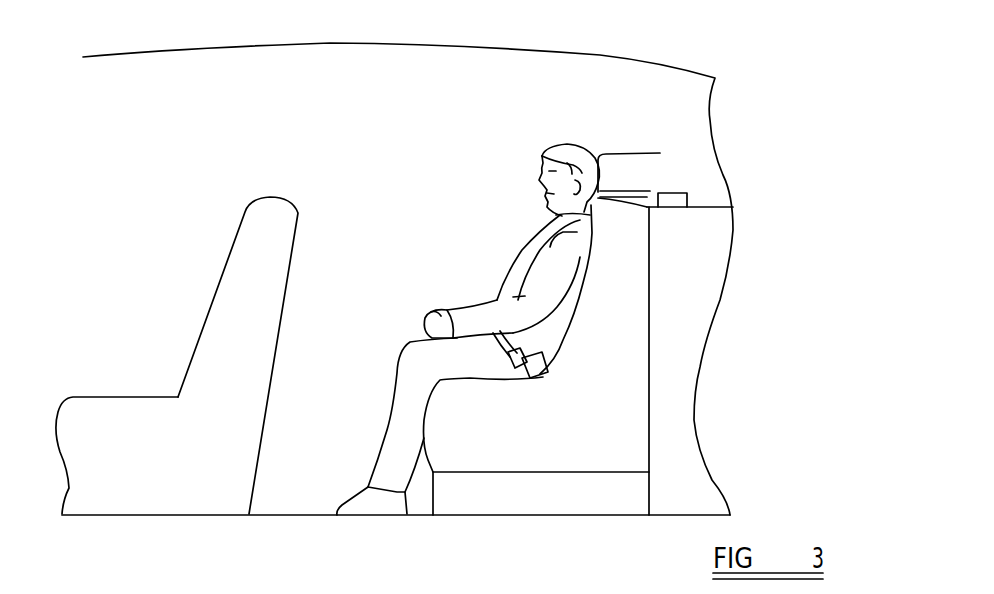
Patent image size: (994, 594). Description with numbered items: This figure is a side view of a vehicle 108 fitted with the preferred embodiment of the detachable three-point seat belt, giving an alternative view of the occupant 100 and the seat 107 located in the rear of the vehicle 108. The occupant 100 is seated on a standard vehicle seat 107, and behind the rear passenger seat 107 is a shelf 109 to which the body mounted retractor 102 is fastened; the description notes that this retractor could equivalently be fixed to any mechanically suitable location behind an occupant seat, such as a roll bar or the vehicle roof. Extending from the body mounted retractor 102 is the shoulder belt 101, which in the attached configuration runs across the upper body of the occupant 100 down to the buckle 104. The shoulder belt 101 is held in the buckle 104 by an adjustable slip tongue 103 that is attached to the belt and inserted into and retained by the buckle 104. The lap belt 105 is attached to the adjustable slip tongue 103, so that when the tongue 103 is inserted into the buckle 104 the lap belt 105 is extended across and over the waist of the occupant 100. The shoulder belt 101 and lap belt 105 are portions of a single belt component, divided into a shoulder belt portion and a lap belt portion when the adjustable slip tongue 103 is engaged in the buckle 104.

The vehicle occupant 100 is at (660, 154).
The shoulder belt 101 is at (523, 258).
The body mounted retractor 102 is at (678, 208).
The adjustable (slip) tongue 103 is at (543, 352).
The buckle 104 is at (543, 375).
The lap belt 105 is at (520, 333).
The vehicle seat 107 is at (633, 319).
The vehicle 108 is at (628, 57).
The shelf 109 is at (703, 207).